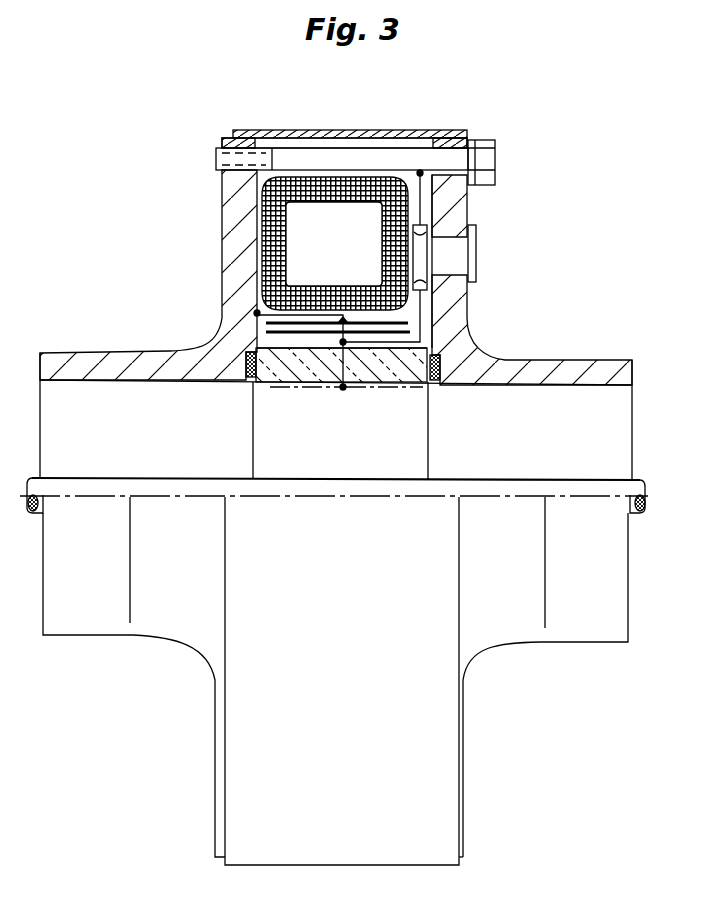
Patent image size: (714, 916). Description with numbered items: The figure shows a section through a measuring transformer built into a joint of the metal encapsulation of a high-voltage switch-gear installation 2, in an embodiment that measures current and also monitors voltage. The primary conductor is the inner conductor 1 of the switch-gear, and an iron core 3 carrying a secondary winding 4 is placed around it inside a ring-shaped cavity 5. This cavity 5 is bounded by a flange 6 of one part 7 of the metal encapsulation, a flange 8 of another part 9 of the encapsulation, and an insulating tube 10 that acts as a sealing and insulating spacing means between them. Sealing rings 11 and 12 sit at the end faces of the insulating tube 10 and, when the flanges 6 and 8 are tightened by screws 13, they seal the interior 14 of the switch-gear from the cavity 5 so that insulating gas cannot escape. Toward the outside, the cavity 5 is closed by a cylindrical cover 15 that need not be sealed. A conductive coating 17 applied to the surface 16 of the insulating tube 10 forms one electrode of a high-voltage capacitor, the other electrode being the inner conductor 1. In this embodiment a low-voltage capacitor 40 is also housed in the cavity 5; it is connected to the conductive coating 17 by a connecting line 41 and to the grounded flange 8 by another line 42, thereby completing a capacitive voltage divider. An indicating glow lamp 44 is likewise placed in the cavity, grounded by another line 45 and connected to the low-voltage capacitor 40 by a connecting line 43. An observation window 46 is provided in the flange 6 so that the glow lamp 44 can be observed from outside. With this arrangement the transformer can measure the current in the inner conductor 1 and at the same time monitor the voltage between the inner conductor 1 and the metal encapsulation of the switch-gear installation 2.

The inner conductor 1 is at (620, 486).
The high-voltage switch-gear installation 2 is at (600, 398).
The iron core 3 is at (318, 220).
The secondary winding 4 is at (395, 180).
The ring-shaped cavity 5 is at (421, 318).
The flange 6 is at (452, 220).
The part of the metal encapsulation 7 is at (574, 372).
The flange 8 is at (237, 199).
The part of the metal encapsulation 9 is at (72, 365).
The insulating tube 10 is at (426, 343).
The sealing ring 11 is at (455, 362).
The sealing ring 12 is at (247, 362).
The screws 13 is at (355, 160).
The interior 14 is at (620, 425).
The cylindrical cover 15 is at (237, 133).
The surface 16 is at (423, 386).
The conductive coating 17 is at (290, 387).
The low-voltage capacitor 40 is at (317, 326).
The connecting line 41 is at (364, 386).
The line 42 is at (256, 312).
The connecting line 43 is at (412, 296).
The indicating glow lamp 44 is at (418, 243).
The line 45 is at (432, 198).
The observation window 46 is at (452, 260).